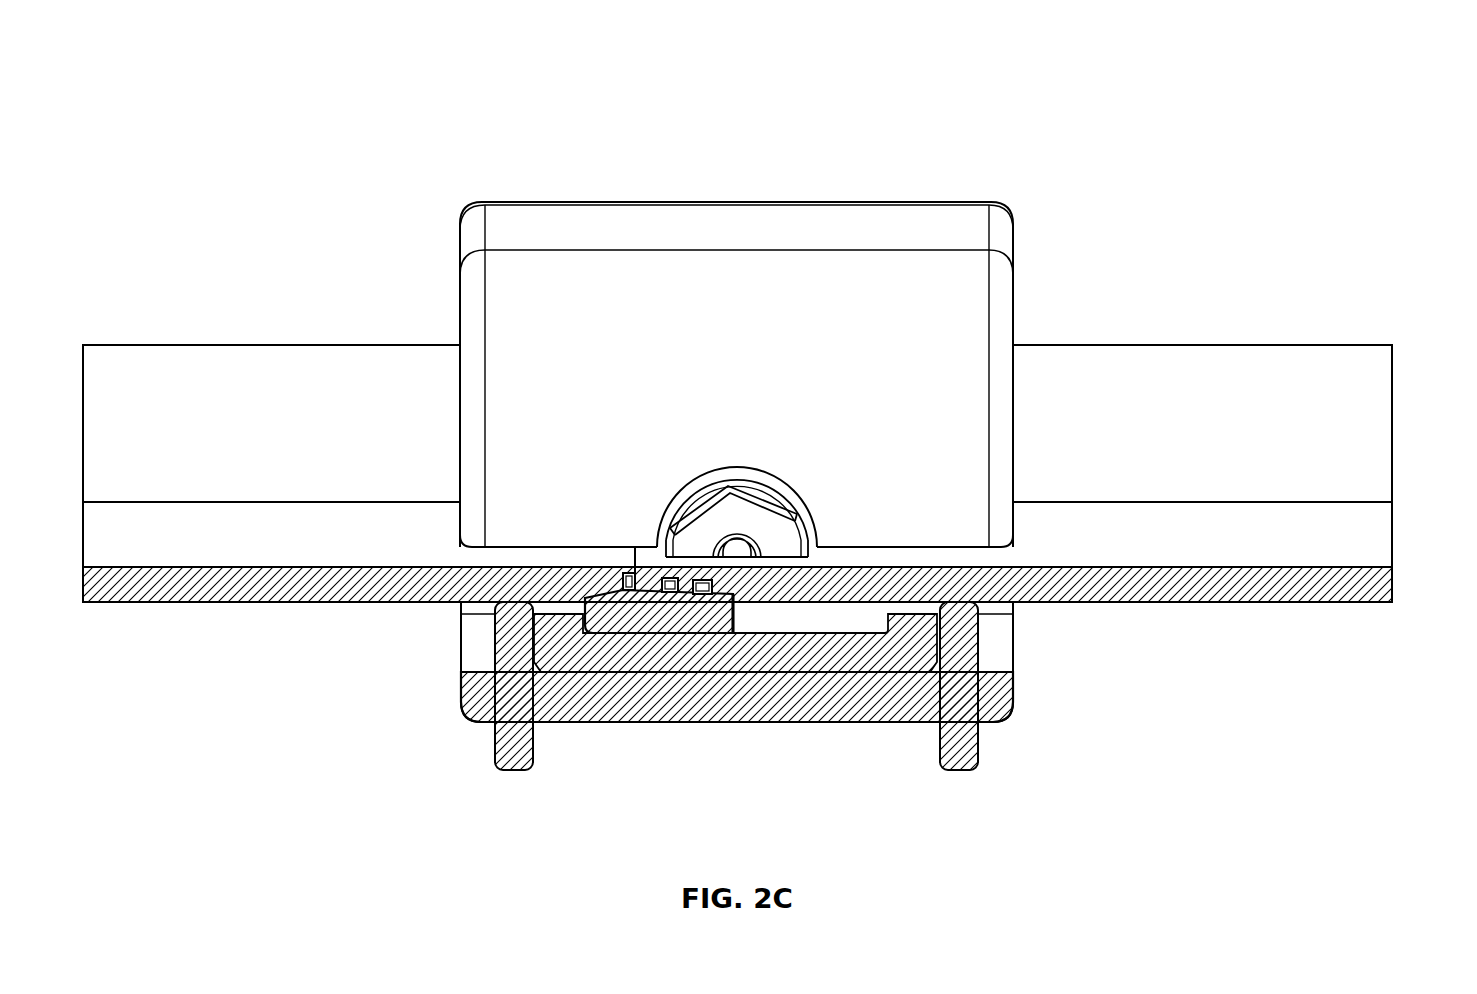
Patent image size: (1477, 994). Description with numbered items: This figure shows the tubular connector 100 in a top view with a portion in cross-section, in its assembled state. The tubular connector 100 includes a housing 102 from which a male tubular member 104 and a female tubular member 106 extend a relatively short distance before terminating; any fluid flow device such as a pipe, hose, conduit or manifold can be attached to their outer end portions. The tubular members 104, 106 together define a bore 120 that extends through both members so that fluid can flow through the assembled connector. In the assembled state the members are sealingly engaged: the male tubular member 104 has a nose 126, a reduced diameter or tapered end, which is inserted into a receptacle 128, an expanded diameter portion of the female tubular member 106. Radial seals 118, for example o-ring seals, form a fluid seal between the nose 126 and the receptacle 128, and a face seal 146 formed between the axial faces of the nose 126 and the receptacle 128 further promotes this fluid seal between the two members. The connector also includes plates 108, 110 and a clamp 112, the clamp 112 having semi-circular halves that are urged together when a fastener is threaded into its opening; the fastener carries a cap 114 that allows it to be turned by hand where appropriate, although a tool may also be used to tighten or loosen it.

The tubular connector 100 is at (1230, 80).
The housing 102 is at (1010, 207).
The male tubular member 104 is at (1305, 342).
The female tubular member 106 is at (213, 342).
The plate 108 is at (961, 776).
The plate 110 is at (514, 776).
The clamp 112 is at (897, 650).
The cap 114 is at (737, 518).
The radial seals 118 is at (670, 593).
The bore 120 is at (1368, 538).
The nose 126 is at (733, 600).
The receptacle 128 is at (617, 617).
The face seal 146 is at (623, 584).